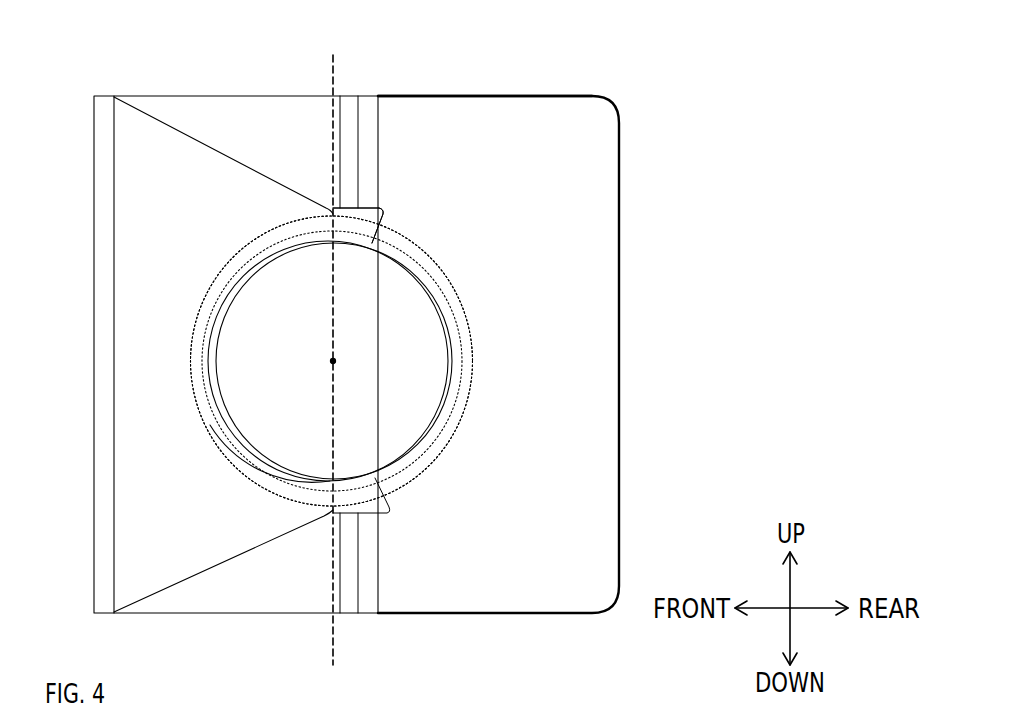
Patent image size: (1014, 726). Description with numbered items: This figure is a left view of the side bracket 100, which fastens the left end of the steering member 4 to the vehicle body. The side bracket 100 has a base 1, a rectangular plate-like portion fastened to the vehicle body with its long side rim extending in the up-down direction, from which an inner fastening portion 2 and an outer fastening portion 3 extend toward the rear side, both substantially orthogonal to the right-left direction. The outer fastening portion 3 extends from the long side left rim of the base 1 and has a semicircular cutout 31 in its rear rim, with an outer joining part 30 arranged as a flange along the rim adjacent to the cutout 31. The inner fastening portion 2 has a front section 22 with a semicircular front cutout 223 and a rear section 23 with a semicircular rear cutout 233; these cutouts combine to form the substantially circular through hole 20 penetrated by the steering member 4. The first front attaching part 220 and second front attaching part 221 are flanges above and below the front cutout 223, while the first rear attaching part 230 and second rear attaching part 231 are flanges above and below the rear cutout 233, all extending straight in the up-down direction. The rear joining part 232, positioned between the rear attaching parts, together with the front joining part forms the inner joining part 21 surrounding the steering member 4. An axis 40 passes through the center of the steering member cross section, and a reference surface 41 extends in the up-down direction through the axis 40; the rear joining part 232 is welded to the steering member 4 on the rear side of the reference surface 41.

The side bracket 100 is at (670, 115).
The base 1 is at (103, 126).
The inner fastening portion 2 is at (630, 433).
The outer fastening portion 3 is at (135, 240).
The steering member 4 is at (237, 430).
The through hole 20 is at (470, 152).
The inner joining part 21 is at (332, 361).
The front section 22 is at (205, 113).
The rear section 23 is at (502, 120).
The outer joining part 30 is at (262, 258).
The cutout 31 is at (283, 443).
The axis 40 is at (331, 361).
The reference surface 41 is at (335, 637).
The first front attaching part 220 is at (348, 105).
The second front attaching part 221 is at (350, 597).
The front cutout 223 is at (283, 292).
The first rear attaching part 230 is at (367, 108).
The second rear attaching part 231 is at (368, 598).
The rear joining part 232 is at (465, 352).
The rear cutout 233 is at (380, 302).